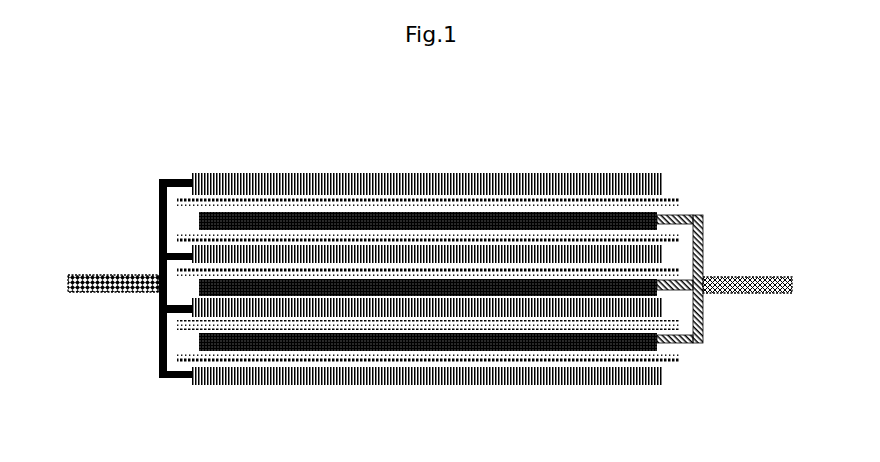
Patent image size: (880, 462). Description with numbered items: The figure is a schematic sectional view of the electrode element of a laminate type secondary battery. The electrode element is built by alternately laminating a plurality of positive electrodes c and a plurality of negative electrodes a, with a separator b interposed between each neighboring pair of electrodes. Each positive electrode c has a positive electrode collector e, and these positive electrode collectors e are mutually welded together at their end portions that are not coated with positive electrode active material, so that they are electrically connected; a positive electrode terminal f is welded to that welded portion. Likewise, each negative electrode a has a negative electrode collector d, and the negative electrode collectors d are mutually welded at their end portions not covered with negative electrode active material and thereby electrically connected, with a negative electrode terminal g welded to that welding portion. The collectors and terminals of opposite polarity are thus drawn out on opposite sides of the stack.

The negative electrode a is at (297, 165).
The separator b is at (672, 190).
The positive electrode c is at (193, 363).
The negative electrode collector d is at (148, 330).
The positive electrode collector e is at (712, 337).
The positive electrode terminal f is at (737, 267).
The negative electrode terminal g is at (117, 270).